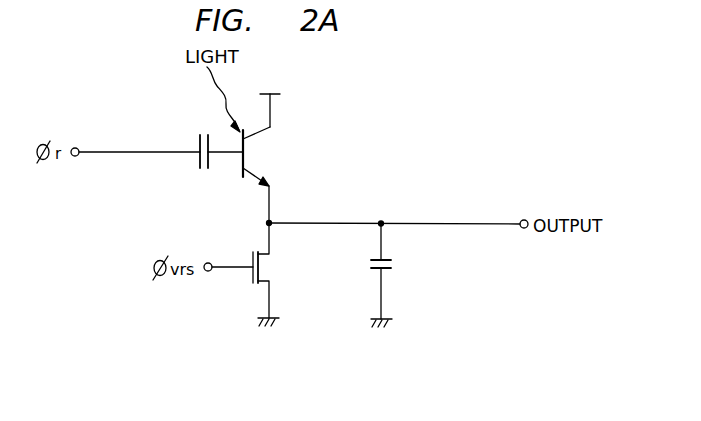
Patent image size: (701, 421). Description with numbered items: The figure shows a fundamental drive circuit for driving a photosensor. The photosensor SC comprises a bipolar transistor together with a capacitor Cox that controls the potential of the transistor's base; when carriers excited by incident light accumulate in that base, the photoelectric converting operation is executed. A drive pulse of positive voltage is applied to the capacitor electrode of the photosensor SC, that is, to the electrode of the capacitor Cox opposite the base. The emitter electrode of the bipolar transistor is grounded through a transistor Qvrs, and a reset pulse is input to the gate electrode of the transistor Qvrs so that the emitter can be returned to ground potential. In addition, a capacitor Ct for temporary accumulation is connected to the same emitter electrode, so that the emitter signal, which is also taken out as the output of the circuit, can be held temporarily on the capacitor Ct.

The capacitor Cox is at (215, 163).
The photosensor SC is at (259, 153).
The transistor Qvrs is at (280, 274).
The capacitor for temporary accumulation Ct is at (392, 275).